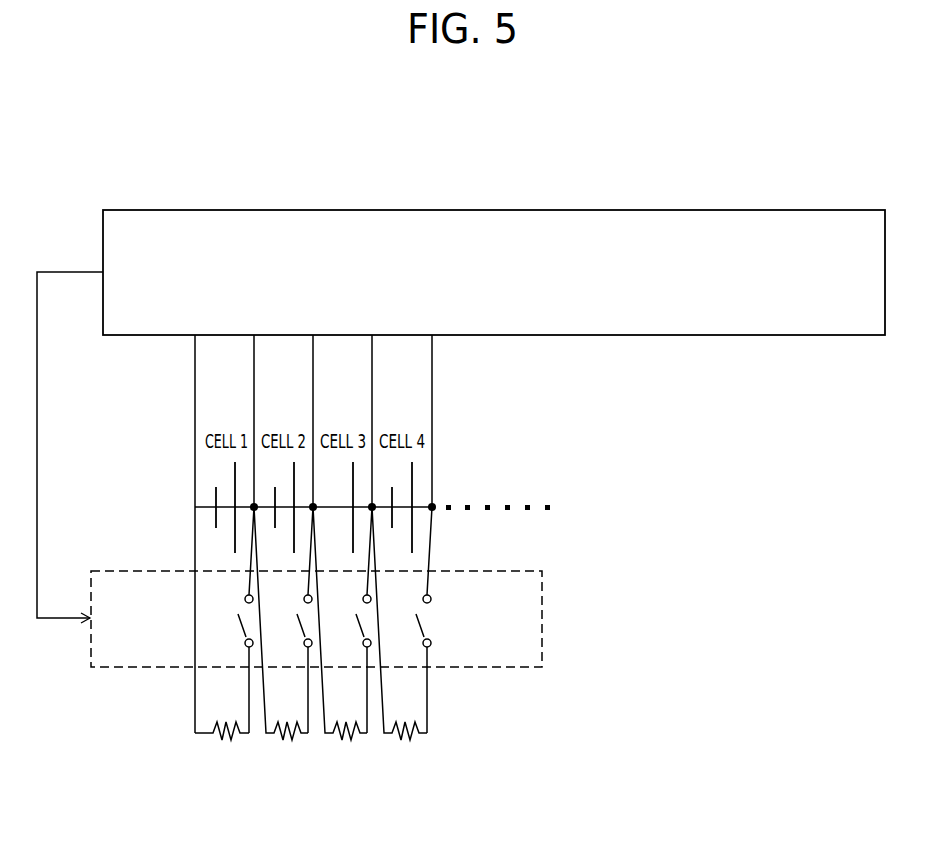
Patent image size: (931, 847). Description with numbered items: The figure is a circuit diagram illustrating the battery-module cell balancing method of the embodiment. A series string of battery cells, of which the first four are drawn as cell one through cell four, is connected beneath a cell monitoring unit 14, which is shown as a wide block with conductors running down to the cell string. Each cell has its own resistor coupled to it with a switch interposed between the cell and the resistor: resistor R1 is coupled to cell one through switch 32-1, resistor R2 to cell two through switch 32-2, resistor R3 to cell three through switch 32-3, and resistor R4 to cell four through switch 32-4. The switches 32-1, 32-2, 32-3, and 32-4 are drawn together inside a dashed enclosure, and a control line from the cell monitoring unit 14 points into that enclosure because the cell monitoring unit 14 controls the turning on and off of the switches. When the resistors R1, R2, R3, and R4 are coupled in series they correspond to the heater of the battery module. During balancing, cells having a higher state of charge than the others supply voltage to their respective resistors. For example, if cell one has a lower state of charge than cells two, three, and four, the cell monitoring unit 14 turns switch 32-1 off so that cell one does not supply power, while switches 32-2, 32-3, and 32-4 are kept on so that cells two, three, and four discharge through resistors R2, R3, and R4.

The cell monitoring unit 14 is at (484, 235).
The switch 32-1 is at (236, 622).
The switch 32-2 is at (296, 601).
The switch 32-3 is at (374, 611).
The switch 32-4 is at (438, 609).
The resistor R1 is at (232, 747).
The resistor R2 is at (290, 747).
The resistor R3 is at (349, 747).
The resistor R4 is at (408, 747).